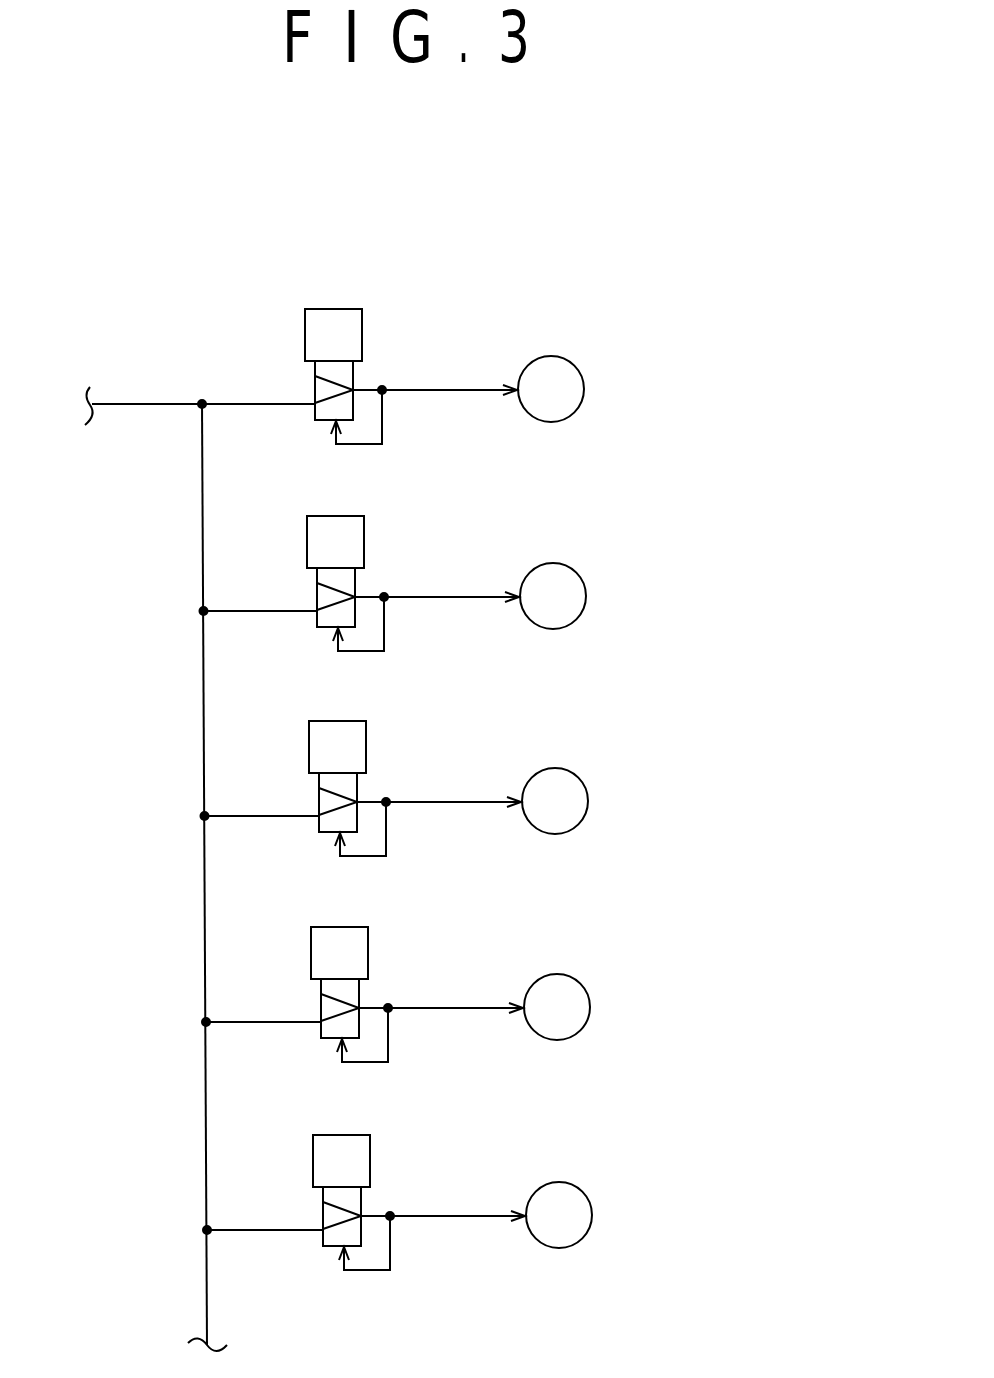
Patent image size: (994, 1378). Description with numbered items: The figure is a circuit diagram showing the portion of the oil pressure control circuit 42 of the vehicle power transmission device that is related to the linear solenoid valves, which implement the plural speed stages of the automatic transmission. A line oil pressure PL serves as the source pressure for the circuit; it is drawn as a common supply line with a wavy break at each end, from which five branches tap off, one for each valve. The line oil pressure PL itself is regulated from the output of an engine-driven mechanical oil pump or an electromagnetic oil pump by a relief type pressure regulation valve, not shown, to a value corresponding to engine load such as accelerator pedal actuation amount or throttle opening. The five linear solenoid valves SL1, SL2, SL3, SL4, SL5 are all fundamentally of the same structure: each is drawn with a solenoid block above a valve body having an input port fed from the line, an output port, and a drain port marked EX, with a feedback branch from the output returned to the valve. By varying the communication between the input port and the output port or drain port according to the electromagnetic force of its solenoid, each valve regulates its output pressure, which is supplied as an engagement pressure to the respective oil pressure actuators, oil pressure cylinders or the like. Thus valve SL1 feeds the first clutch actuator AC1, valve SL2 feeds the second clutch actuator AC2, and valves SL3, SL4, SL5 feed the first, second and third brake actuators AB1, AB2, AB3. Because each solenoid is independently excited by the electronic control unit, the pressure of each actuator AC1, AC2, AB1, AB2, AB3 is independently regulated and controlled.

The oil pressure control circuit 42 is at (187, 265).
The line oil pressure PL is at (200, 856).
The linear solenoid valve SL1 is at (354, 369).
The linear solenoid valve SL2 is at (356, 576).
The linear solenoid valve SL3 is at (358, 781).
The linear solenoid valve SL4 is at (360, 987).
The linear solenoid valve SL5 is at (362, 1195).
The oil pressure actuator of clutch C1 AC1 is at (550, 355).
The oil pressure actuator of clutch C2 AC2 is at (579, 564).
The oil pressure actuator of brake B1 AB1 is at (581, 769).
The oil pressure actuator of brake B2 AB2 is at (583, 975).
The oil pressure actuator of brake B3 AB3 is at (585, 1183).